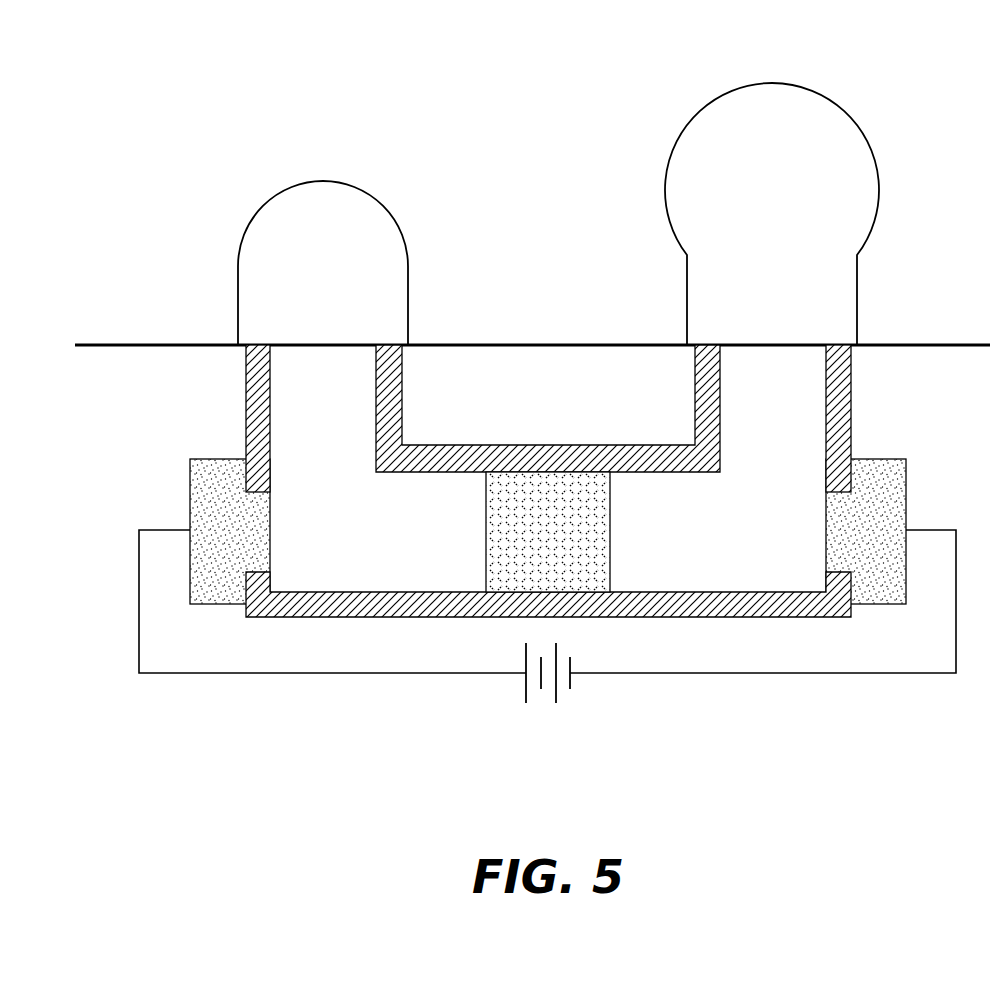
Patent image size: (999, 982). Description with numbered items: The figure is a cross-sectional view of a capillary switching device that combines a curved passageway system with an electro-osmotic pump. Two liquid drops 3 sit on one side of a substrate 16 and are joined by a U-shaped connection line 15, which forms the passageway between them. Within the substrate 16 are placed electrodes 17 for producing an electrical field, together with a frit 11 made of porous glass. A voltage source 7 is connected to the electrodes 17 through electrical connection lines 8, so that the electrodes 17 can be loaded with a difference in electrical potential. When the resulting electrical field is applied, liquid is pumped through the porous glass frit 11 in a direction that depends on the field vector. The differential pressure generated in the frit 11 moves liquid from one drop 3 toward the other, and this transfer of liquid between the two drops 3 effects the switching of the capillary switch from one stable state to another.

The liquid drops 3 is at (322, 187).
The voltage source 7 is at (555, 697).
The electrical connection lines 8 is at (338, 673).
The frit 11 is at (531, 545).
The U-shaped connection line 15 is at (378, 403).
The substrate 16 is at (531, 410).
The electrodes 17 is at (211, 545).